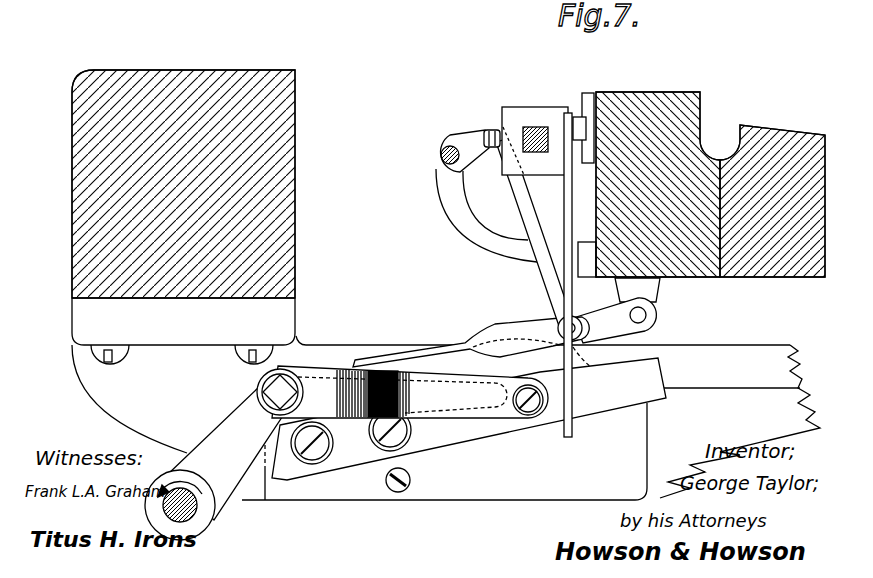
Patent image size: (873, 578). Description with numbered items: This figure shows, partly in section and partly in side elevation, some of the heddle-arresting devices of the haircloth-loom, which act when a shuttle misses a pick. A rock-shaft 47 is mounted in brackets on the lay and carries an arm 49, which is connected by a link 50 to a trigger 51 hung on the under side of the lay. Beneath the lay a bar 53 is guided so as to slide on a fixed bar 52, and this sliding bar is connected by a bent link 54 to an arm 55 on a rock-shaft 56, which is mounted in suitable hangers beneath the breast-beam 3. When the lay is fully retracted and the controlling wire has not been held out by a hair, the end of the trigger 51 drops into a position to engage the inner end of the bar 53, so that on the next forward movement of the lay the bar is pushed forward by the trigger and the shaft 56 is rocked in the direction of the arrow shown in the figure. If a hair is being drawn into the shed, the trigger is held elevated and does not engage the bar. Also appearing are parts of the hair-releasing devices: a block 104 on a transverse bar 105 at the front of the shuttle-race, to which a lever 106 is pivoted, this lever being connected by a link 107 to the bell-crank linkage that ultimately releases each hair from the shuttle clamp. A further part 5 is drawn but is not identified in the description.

The breast-beam 3 is at (295, 234).
The bed block 5 is at (662, 93).
The rock-shaft 47 is at (440, 157).
The arm 49 is at (468, 138).
The link 50 is at (529, 231).
The trigger 51 is at (471, 342).
The fixed bar 52 is at (446, 418).
The bar 53 is at (228, 453).
The bent link 54 is at (402, 392).
The arm 55 is at (513, 425).
The rock-shaft 56 is at (192, 514).
The block 104 is at (515, 107).
The transverse bar 105 is at (540, 127).
The lever 106 is at (590, 94).
The link 107 is at (578, 178).